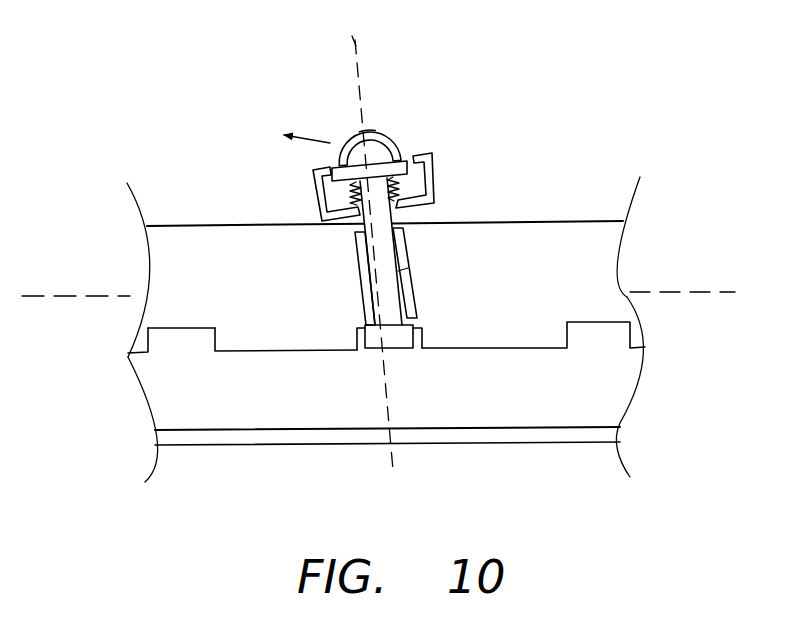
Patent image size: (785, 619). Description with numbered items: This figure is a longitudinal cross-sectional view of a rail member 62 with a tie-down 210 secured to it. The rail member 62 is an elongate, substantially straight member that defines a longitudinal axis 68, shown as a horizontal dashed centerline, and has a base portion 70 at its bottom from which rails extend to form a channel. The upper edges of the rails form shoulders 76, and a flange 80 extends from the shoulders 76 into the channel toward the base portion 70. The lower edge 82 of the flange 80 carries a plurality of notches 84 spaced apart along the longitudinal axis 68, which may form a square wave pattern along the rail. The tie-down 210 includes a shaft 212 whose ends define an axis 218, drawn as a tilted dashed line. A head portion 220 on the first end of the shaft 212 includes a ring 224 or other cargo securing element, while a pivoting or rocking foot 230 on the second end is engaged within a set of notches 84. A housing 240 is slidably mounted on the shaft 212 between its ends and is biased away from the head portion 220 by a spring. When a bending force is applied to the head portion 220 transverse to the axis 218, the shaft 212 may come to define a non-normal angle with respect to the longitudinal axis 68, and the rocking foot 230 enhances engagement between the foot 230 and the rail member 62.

The rail member 62 is at (345, 234).
The longitudinal axis 68 is at (700, 293).
The base portion 70 is at (190, 437).
The shoulders 76 is at (185, 224).
The flange 80 is at (163, 253).
The lower edge 82 is at (371, 405).
The notches 84 is at (183, 330).
The tie-down 210 is at (430, 247).
The shaft 212 is at (408, 268).
The axis 218 is at (357, 47).
The head portion 220 is at (406, 138).
The ring 224 is at (373, 130).
The foot 230 is at (392, 350).
The housing 240 is at (430, 180).